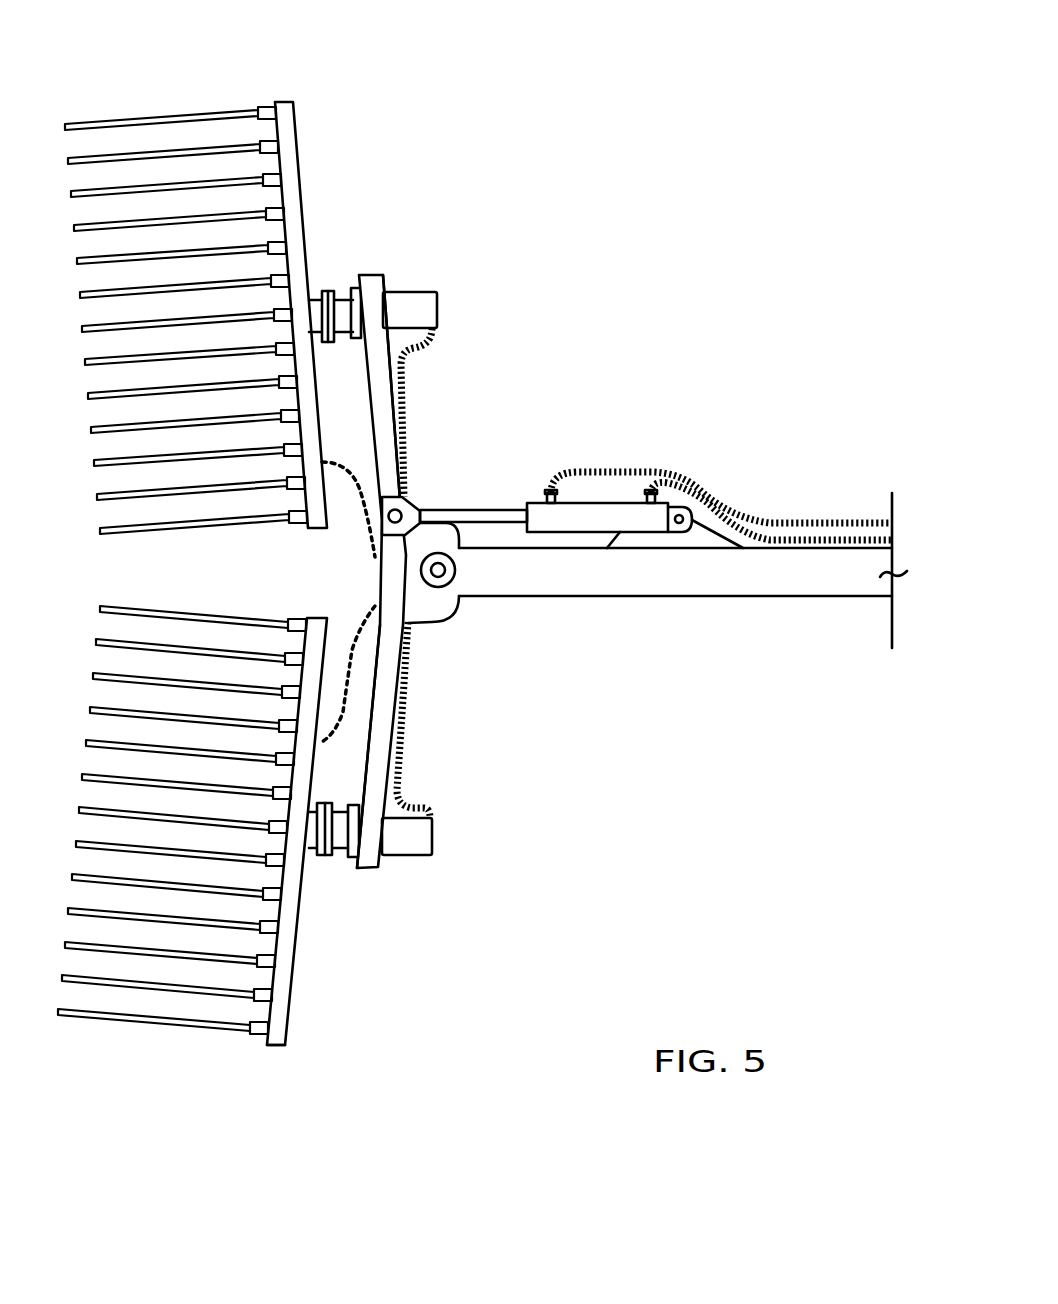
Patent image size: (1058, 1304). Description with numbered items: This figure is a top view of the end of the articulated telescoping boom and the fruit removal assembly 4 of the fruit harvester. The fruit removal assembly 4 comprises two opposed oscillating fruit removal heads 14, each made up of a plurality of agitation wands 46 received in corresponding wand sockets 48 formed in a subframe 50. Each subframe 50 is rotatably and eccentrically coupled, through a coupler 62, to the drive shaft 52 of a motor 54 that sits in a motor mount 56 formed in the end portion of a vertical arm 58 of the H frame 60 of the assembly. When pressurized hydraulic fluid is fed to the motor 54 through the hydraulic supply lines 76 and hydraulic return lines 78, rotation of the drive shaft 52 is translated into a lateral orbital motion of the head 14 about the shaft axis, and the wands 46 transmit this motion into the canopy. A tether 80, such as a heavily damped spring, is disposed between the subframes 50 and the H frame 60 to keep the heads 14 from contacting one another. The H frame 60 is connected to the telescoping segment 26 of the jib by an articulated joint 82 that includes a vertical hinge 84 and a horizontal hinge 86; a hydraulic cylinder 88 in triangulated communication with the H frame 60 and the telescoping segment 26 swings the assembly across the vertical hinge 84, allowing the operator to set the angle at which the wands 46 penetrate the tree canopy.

The fruit removal assembly 4 is at (495, 561).
The oscillating fruit removal head 14 is at (254, 624).
The telescoping segment 26 is at (610, 595).
The agitation wand 46 is at (135, 122).
The wand socket 48 is at (257, 1040).
The subframe 50 is at (300, 170).
The drive shaft 52 is at (348, 292).
The motor 54 is at (430, 294).
The motor mount 56 is at (380, 277).
The vertical arm 58 is at (388, 380).
The H frame 60 is at (497, 342).
The coupler 62 is at (335, 292).
The hydraulic supply line 76 is at (765, 540).
The hydraulic return line 78 is at (717, 493).
The tether 80 is at (363, 538).
The articulated joint 82 is at (494, 720).
The vertical hinge 84 is at (458, 597).
The horizontal hinge 86 is at (459, 662).
The hydraulic cylinder 88 is at (572, 503).